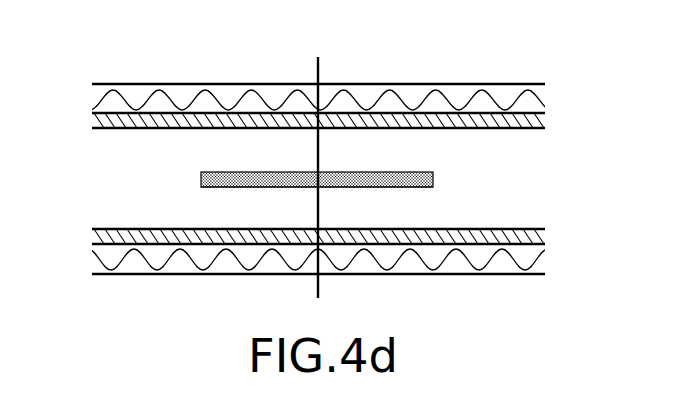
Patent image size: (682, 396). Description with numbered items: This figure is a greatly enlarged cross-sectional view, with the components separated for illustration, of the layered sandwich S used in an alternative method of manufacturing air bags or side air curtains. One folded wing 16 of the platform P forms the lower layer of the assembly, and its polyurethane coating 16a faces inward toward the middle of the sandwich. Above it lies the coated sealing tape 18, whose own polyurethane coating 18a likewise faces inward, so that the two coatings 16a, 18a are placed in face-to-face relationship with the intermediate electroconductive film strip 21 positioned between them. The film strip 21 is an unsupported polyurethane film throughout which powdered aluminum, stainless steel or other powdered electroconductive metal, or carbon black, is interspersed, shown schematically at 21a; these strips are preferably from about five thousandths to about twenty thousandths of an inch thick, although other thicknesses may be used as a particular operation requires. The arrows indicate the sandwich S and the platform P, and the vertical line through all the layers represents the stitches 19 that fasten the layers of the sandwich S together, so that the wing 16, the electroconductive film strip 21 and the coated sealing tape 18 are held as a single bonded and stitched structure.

The wing 16 is at (176, 273).
The polyurethane coating 16a is at (523, 230).
The coated sealing tape 18 is at (131, 84).
The polyurethane coating 18a is at (127, 121).
The stitches 19 is at (318, 69).
The intermediate electroconductive film strip 21 is at (435, 178).
The powdered electroconductive metal or carbon black 21a is at (348, 189).
The platform P is at (124, 217).
The sandwich S is at (568, 139).